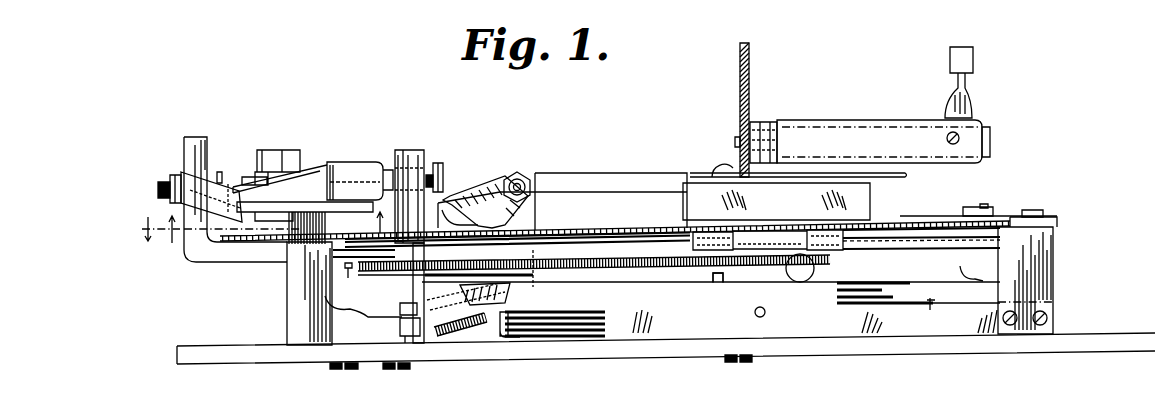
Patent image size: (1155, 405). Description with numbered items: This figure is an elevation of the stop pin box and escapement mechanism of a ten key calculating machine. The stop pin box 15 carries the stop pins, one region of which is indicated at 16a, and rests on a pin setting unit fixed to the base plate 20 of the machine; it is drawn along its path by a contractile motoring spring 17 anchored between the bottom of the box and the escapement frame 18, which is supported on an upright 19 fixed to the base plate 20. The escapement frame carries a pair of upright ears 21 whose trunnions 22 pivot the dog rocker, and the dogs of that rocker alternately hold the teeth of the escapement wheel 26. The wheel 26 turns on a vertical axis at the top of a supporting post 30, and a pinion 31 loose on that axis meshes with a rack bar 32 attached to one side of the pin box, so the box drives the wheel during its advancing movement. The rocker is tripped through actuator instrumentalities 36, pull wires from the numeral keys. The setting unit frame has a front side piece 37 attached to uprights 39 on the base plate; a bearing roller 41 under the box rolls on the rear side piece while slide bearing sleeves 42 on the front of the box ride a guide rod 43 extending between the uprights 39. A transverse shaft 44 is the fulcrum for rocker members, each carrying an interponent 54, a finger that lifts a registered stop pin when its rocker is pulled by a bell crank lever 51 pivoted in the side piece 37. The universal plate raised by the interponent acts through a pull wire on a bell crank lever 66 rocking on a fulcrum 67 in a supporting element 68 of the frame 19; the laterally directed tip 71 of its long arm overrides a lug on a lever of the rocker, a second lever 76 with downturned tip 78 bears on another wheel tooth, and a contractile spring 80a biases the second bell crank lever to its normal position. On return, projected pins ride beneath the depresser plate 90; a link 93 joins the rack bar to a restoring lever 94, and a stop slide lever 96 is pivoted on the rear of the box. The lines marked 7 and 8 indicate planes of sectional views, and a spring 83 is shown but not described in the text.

The section line 7- 7 is at (264, 217).
The section line 8- 8 is at (272, 237).
The stop pin box 15 is at (872, 205).
The housing 16a is at (730, 170).
The contractile motoring spring 17 is at (757, 263).
The escapement frame 18 is at (217, 255).
The upright 19 is at (355, 307).
The base plate 20 is at (692, 347).
The upright ears 21 is at (193, 143).
The trunnions 22 is at (160, 187).
The escapement wheel 26 is at (320, 207).
The supporting post 30 is at (297, 312).
The pinion 31 is at (313, 250).
The rack bar 32 is at (268, 237).
The actuator instrumentalities 36 is at (967, 266).
The front side piece 37 is at (812, 325).
The uprights 39 is at (413, 285).
The bearing roller 41 is at (810, 266).
The slide bearing sleeves 42 is at (817, 240).
The guide rod 43 is at (628, 245).
The shaft 44 is at (767, 312).
The bell crank lever 51 is at (585, 332).
The interponent 54 is at (713, 283).
The bell crank lever 66 is at (532, 215).
The fulcrum 67 is at (523, 180).
The supporting element 68 is at (497, 187).
The laterally directed tip 71 is at (257, 158).
The second lever 76 is at (313, 165).
The downturned tip 78 is at (358, 170).
The contractile spring 80a is at (437, 337).
The spring 83 is at (453, 332).
The depresser plate 90 is at (726, 168).
The link 93 is at (1007, 217).
The restoring lever 94 is at (1057, 223).
The stop slide lever 96 is at (598, 180).